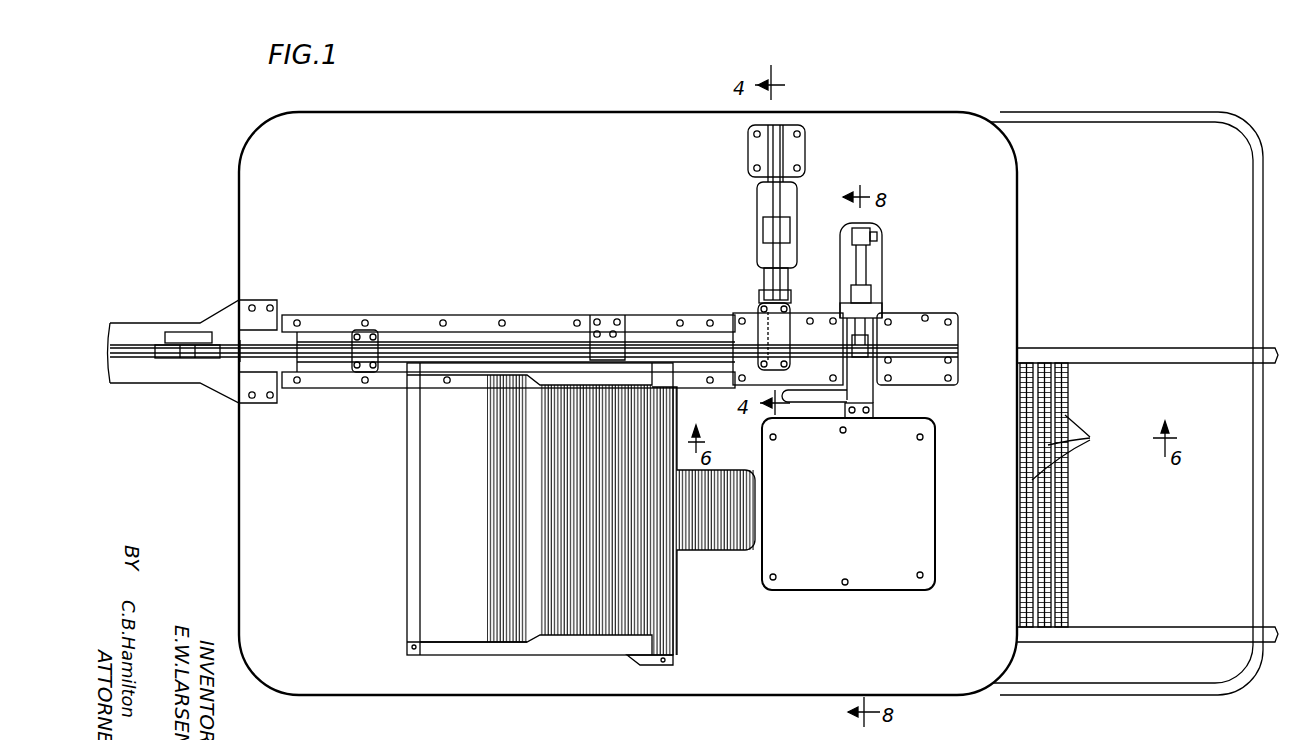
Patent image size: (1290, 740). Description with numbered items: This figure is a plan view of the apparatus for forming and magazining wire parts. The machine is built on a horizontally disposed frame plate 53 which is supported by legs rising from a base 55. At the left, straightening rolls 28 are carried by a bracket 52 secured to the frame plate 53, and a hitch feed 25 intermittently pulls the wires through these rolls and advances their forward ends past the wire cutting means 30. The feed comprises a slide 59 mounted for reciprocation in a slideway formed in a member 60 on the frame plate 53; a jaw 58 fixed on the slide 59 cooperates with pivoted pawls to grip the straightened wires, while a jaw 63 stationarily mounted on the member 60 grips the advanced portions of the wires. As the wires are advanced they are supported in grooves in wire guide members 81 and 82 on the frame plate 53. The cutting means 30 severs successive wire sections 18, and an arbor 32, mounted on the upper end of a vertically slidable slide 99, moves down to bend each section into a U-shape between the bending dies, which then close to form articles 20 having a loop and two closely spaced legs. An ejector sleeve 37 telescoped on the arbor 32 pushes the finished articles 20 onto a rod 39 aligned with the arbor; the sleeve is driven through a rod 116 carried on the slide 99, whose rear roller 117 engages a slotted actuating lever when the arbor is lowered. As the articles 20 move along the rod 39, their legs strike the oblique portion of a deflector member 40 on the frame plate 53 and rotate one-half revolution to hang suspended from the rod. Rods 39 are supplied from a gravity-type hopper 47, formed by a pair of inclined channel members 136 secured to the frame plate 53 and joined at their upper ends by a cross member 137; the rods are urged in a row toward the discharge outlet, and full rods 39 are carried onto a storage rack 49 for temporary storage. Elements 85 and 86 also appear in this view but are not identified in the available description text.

The frame plate 53 is at (571, 128).
The base 55 is at (1108, 130).
The storage rack 49 is at (1148, 348).
The rod 39 is at (1027, 362).
The articles 20 is at (1073, 447).
The bracket 52 is at (230, 320).
The hitch feed 25 is at (310, 320).
The straightening rolls 28 is at (195, 360).
The wire sections 18 is at (262, 352).
The member 60 is at (463, 320).
The slide 59 is at (335, 332).
The jaw 58 is at (365, 340).
The jaw 63 is at (603, 332).
The cross member 137 is at (409, 543).
The inclined channel members 136 is at (545, 365).
The gravity-type hopper 47 is at (457, 662).
The clamp 85 is at (757, 334).
The wire cutting means 30 is at (752, 302).
The cylinder 86 is at (775, 205).
The wire guide member 81 is at (787, 298).
The rod 116 is at (866, 265).
The roller 117 is at (878, 236).
The slide 99 is at (870, 302).
The ejector sleeve 37 is at (856, 326).
The arbor 32 is at (868, 342).
The deflector member 40 is at (873, 397).
The wire guide member 82 is at (933, 365).